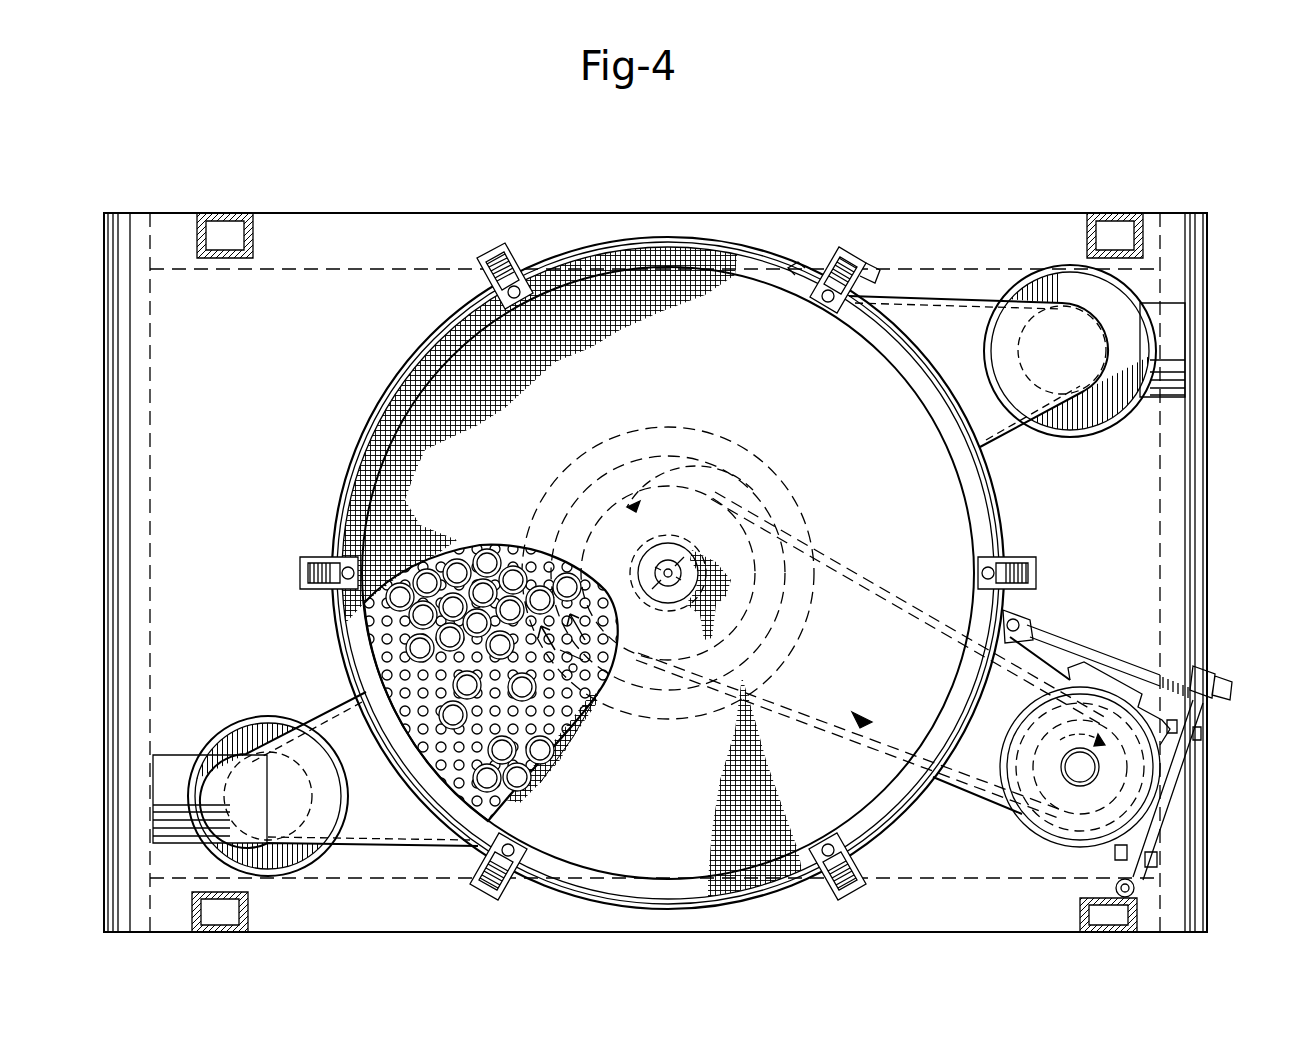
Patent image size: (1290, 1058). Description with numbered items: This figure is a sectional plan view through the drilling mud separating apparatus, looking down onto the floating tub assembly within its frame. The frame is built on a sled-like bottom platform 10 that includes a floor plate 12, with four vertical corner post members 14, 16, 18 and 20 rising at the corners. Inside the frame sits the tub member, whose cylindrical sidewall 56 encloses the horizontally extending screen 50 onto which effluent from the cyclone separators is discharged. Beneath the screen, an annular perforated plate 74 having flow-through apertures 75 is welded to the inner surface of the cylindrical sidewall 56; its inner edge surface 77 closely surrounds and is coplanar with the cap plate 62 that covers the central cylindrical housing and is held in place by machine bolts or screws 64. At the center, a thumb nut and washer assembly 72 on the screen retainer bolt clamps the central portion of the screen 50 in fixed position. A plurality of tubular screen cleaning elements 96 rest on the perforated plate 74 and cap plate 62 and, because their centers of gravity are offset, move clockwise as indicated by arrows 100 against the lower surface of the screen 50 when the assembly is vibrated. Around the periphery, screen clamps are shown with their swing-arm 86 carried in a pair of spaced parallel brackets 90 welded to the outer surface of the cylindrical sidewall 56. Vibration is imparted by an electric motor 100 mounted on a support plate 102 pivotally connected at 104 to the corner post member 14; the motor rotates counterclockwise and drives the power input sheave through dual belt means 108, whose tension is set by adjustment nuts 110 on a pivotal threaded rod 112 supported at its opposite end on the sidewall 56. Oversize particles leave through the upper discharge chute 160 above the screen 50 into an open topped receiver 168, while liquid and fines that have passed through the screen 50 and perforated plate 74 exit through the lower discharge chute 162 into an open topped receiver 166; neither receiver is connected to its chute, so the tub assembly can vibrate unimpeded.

The sled-like bottom platform 10 is at (104, 236).
The floor plate 12 is at (655, 572).
The vertical corner post member 14 is at (1076, 920).
The vertical corner post member 16 is at (1110, 213).
The vertical corner post member 18 is at (224, 213).
The vertical corner post member 20 is at (250, 918).
The screen 50 is at (637, 556).
The cylindrical sidewall 56 is at (1005, 514).
The cap plate 62 is at (596, 676).
The machine bolts or screws 64 is at (577, 666).
The thumb nut and washer assembly 72 is at (668, 570).
The annular perforated plate 74 is at (360, 637).
The flow-through apertures 75 is at (580, 741).
The inner edge surface 77 is at (552, 482).
The swing-arm 86 is at (497, 266).
The brackets 90 is at (838, 260).
The screen cleaning elements 96 is at (457, 557).
The electric motor 100 is at (572, 630).
The support plate 102 is at (1200, 762).
The pivotal connection 104 is at (1140, 886).
The dual belt means 108 is at (868, 585).
The adjustment nuts 110 is at (1212, 672).
The pivotal threaded rod 112 is at (1080, 646).
The upper discharge chute 160 is at (228, 799).
The lower discharge chute 162 is at (1049, 350).
The open topped receiver 166 is at (1050, 268).
The open topped receiver 168 is at (262, 716).